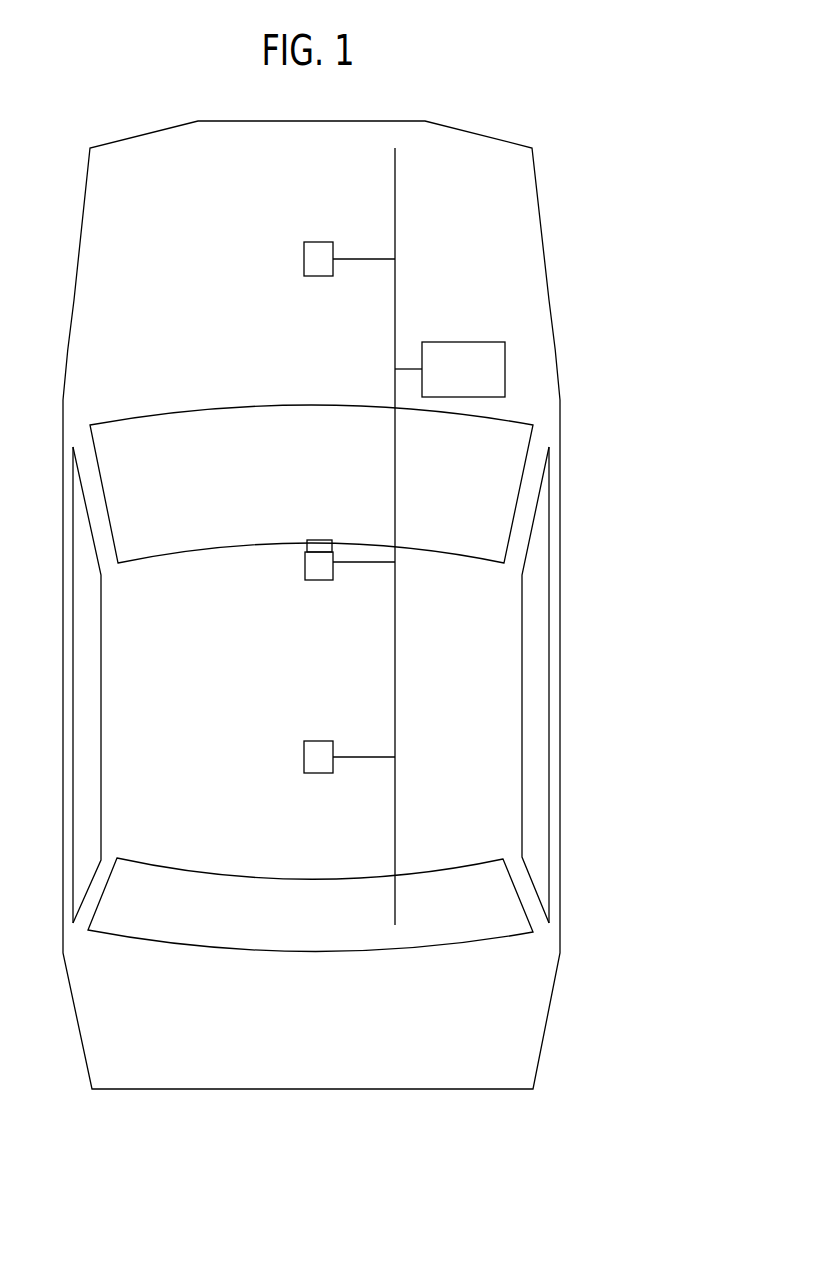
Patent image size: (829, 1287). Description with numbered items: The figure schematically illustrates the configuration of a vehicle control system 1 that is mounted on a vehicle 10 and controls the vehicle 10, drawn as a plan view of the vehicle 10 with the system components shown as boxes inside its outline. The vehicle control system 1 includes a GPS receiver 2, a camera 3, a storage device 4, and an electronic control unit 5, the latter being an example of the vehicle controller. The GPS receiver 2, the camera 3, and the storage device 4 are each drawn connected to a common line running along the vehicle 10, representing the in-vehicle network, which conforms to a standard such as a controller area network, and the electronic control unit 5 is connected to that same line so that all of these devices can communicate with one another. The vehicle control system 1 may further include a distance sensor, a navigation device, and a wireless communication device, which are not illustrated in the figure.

The vehicle control system 1 is at (675, 1117).
The vehicle 10 is at (560, 934).
The GPS receiver 2 is at (304, 765).
The camera 3 is at (305, 572).
The storage device 4 is at (304, 270).
The electronic control unit (ECU) 5 is at (506, 357).